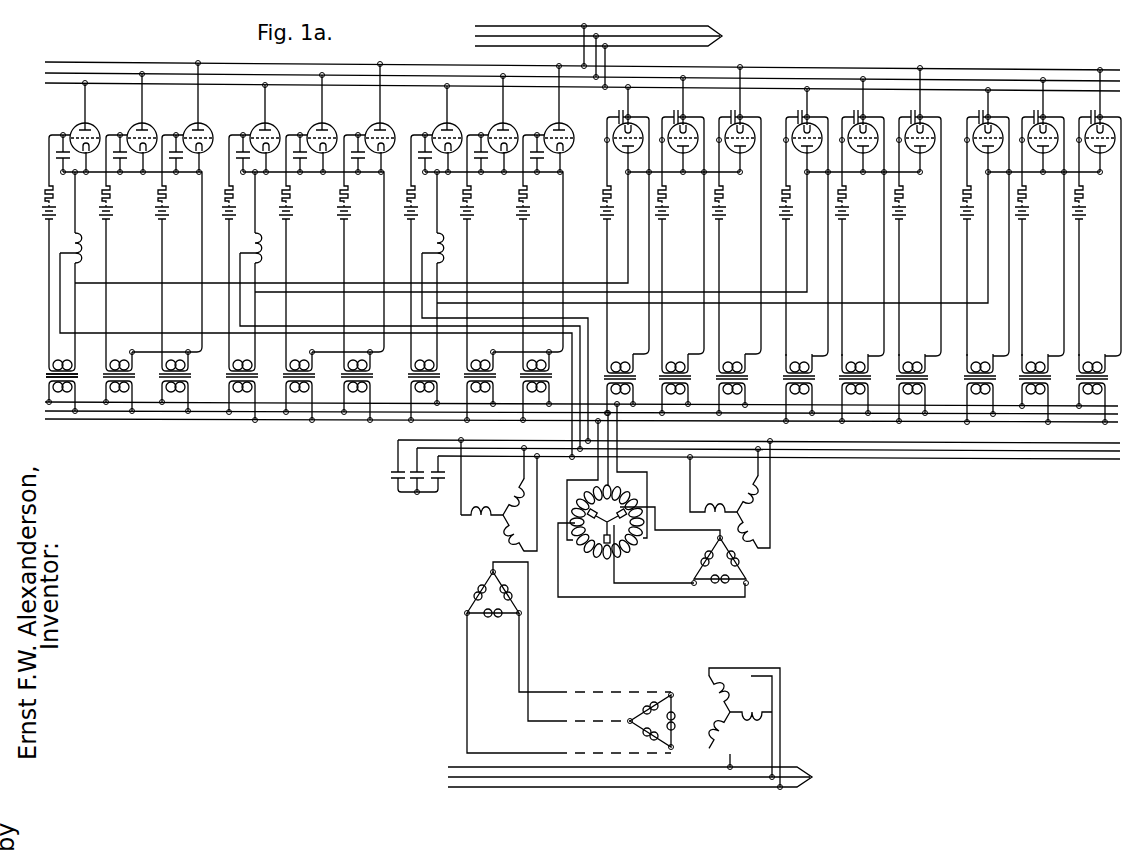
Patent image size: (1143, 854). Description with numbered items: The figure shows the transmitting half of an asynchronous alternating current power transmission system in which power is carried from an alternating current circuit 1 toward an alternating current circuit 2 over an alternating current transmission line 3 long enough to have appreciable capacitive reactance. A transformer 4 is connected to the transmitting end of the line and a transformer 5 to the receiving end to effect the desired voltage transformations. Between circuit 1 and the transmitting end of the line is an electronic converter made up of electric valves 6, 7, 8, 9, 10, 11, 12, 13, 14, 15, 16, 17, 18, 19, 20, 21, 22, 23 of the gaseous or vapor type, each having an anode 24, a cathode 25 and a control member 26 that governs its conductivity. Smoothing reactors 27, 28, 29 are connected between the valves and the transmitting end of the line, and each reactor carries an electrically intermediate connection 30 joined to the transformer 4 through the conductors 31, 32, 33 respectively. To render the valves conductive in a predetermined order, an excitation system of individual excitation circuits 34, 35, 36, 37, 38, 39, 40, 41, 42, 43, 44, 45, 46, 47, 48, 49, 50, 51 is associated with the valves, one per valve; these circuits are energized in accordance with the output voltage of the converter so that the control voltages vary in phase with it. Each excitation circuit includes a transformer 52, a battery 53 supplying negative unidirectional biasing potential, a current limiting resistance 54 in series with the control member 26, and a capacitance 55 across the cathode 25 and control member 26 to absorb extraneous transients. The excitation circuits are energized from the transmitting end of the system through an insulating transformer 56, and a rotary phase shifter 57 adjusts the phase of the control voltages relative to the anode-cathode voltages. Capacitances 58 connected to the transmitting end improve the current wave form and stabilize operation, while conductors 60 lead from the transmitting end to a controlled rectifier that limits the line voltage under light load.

The alternating current circuit 1 is at (604, 57).
The alternating current circuit 2 is at (637, 777).
The alternating current transmission line 3 is at (578, 700).
The transformer 4 is at (482, 551).
The transformer 5 is at (707, 738).
The electric valve 6 is at (75, 126).
The electric valve 7 is at (134, 126).
The electric valve 8 is at (190, 126).
The electric valve 9 is at (256, 126).
The electric valve 10 is at (314, 126).
The electric valve 11 is at (372, 126).
The electric valve 12 is at (440, 126).
The electric valve 13 is at (496, 126).
The electric valve 14 is at (552, 126).
The electric valve 15 is at (624, 220).
The electric valve 16 is at (679, 215).
The electric valve 17 is at (736, 210).
The electric valve 18 is at (803, 222).
The electric valve 19 is at (859, 217).
The electric valve 20 is at (916, 211).
The electric valve 21 is at (984, 222).
The electric valve 22 is at (1039, 217).
The electric valve 23 is at (1099, 212).
The anode 24 is at (88, 128).
The cathode 25 is at (87, 151).
The control member 26 is at (100, 137).
The smoothing reactor 27 is at (86, 250).
The smoothing reactor 28 is at (266, 250).
The smoothing reactor 29 is at (448, 250).
The electrically intermediate connection 30 is at (72, 243).
The conductor 31 is at (128, 332).
The conductor 32 is at (313, 326).
The conductor 33 is at (482, 318).
The excitation circuit 34 is at (70, 349).
The excitation circuit 35 is at (127, 349).
The excitation circuit 36 is at (183, 349).
The excitation circuit 37 is at (250, 349).
The excitation circuit 38 is at (307, 349).
The excitation circuit 39 is at (365, 353).
The excitation circuit 40 is at (432, 353).
The excitation circuit 41 is at (488, 353).
The excitation circuit 42 is at (544, 353).
The excitation circuit 43 is at (628, 357).
The excitation circuit 44 is at (683, 357).
The excitation circuit 45 is at (740, 357).
The excitation circuit 46 is at (807, 357).
The excitation circuit 47 is at (863, 357).
The excitation circuit 48 is at (920, 357).
The excitation circuit 49 is at (988, 357).
The excitation circuit 50 is at (1043, 357).
The excitation circuit 51 is at (1100, 357).
The transformer 52 is at (78, 375).
The battery 53 is at (47, 222).
The current limiting resistance 54 is at (47, 188).
The capacitance 55 is at (56, 154).
The insulating transformer 56 is at (793, 552).
The rotary phase shifter 57 is at (650, 561).
The capacitances 58 is at (418, 470).
The conductors 60 is at (1120, 459).